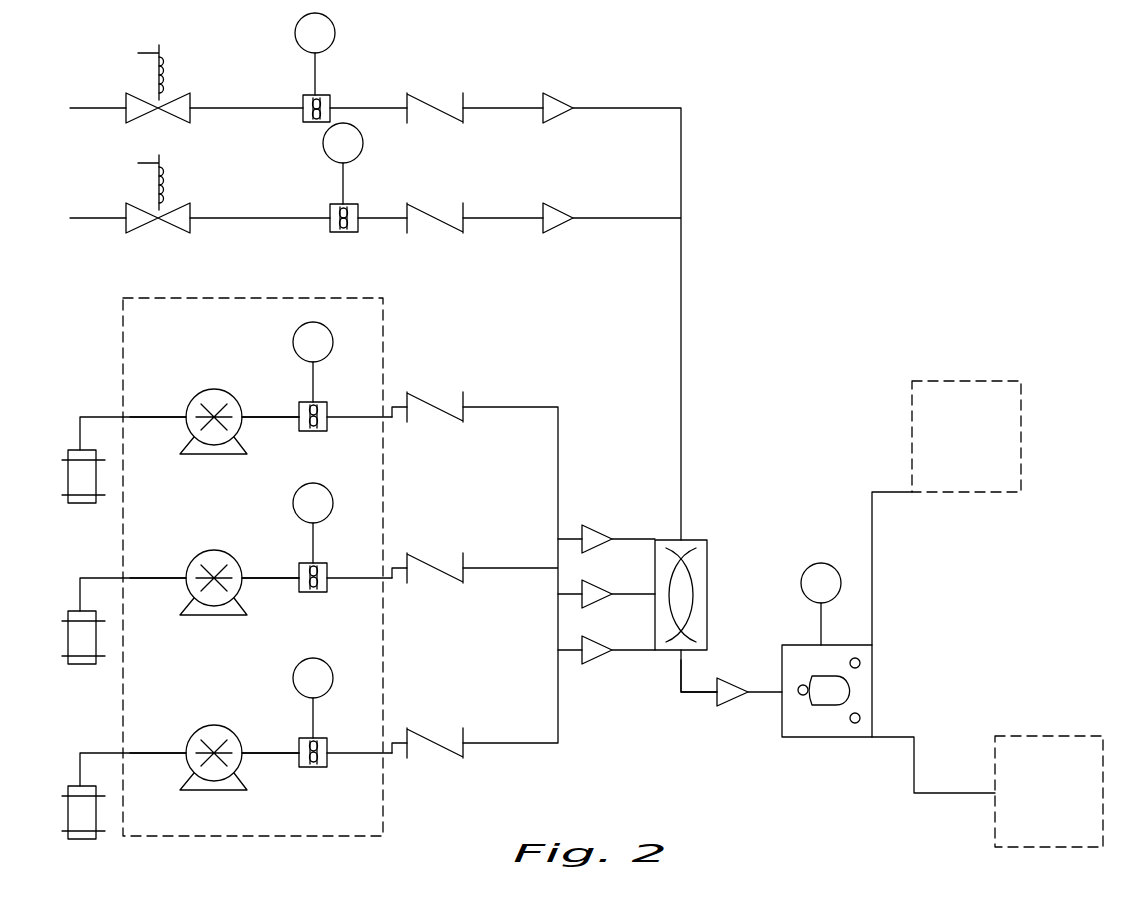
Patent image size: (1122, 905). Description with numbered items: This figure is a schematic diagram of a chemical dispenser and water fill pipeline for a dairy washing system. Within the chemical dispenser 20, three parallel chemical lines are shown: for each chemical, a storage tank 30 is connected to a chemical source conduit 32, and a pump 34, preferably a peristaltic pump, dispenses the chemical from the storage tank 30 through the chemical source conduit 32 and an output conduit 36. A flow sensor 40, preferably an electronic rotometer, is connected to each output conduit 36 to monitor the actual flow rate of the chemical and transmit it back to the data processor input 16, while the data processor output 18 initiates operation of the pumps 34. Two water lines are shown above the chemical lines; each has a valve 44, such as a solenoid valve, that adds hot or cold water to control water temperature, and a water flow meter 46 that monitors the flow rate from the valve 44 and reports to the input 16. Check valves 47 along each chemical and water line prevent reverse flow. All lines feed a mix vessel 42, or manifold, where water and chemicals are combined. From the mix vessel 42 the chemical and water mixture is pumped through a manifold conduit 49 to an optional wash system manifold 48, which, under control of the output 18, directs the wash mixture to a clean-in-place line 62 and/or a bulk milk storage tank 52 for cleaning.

The data processor input 16 is at (328, 375).
The data processor output 18 is at (821, 604).
The chemical dispenser 20 is at (383, 319).
The storage tank 30 is at (82, 487).
The chemical source conduit 32 is at (160, 420).
The pump 34 is at (212, 398).
The output conduit 36 is at (275, 420).
The flow sensor 40 is at (322, 402).
The mix vessel 42 is at (703, 538).
The valve 44 is at (188, 92).
The water flow meter 46 is at (325, 95).
The check valve 47 is at (432, 93).
The wash system manifold 48 is at (820, 737).
The manifold conduit 49 is at (695, 694).
The bulk milk storage tank 52 is at (1050, 745).
The clean-in-place line 62 is at (970, 372).